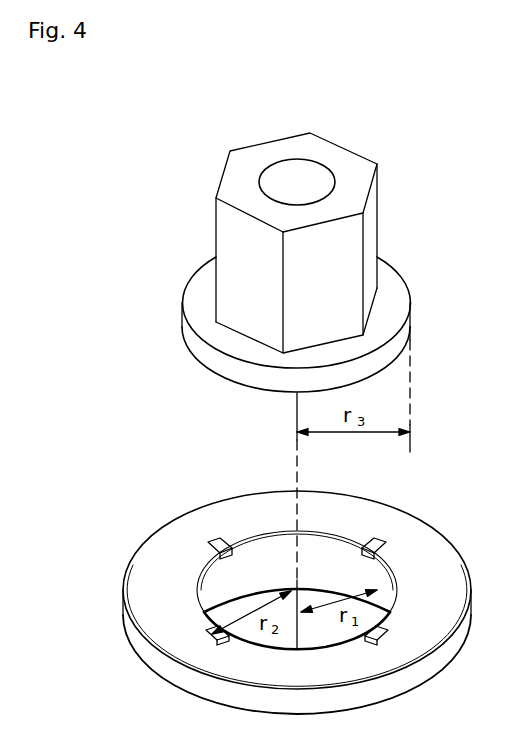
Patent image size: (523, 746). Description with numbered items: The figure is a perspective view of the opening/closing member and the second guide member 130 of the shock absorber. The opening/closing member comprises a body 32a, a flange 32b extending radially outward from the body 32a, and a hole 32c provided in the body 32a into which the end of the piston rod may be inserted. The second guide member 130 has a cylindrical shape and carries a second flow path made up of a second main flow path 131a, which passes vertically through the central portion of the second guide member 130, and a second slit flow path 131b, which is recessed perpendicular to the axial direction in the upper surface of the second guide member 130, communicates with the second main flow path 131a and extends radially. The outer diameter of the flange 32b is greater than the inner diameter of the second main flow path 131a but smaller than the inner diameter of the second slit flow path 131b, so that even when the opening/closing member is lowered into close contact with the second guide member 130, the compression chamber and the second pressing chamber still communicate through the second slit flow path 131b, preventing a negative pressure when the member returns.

The body 32a is at (340, 253).
The flange 32b is at (397, 307).
The hole 32c is at (286, 178).
The second guide member 130 is at (442, 557).
The second main flow path 131a is at (273, 565).
The second slit flow path 131b is at (210, 630).